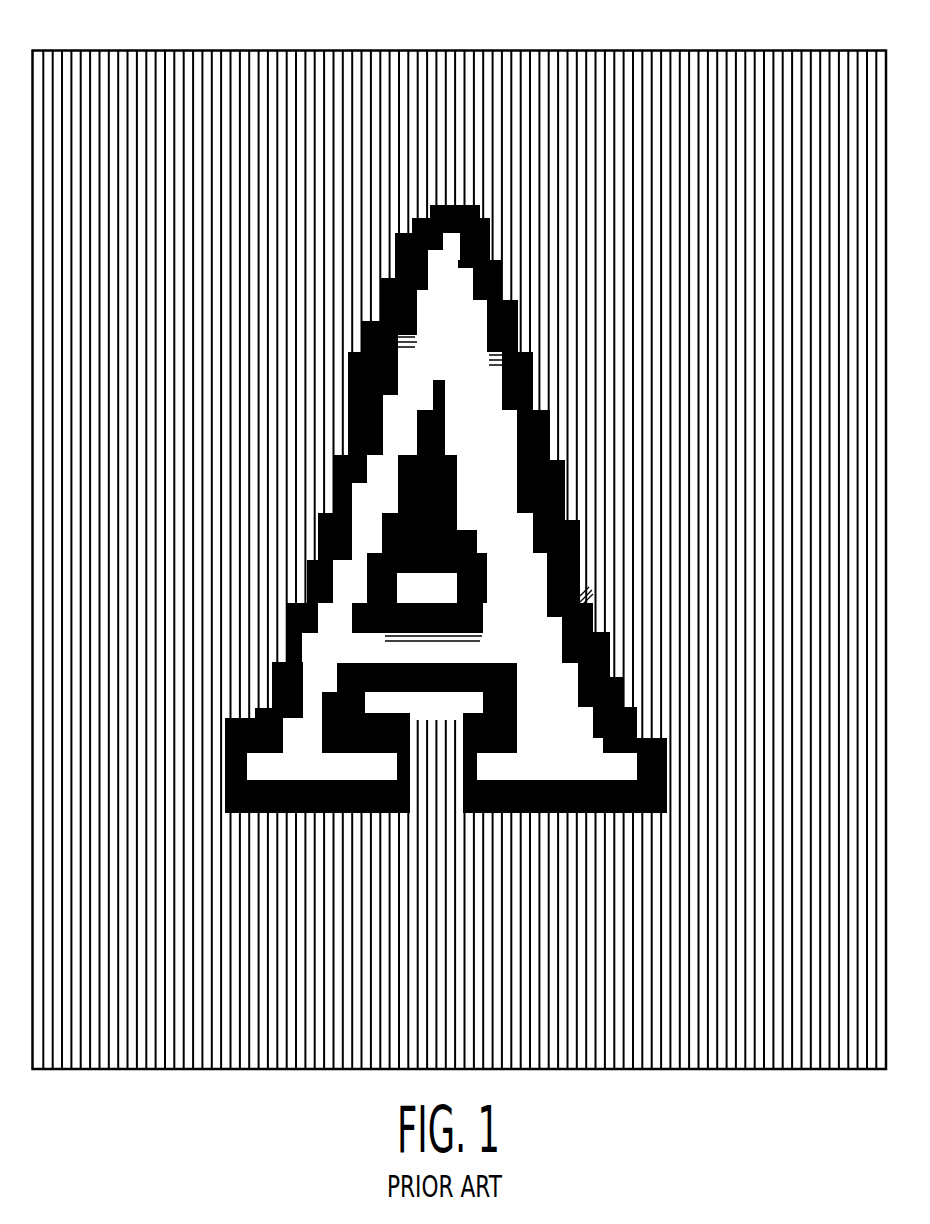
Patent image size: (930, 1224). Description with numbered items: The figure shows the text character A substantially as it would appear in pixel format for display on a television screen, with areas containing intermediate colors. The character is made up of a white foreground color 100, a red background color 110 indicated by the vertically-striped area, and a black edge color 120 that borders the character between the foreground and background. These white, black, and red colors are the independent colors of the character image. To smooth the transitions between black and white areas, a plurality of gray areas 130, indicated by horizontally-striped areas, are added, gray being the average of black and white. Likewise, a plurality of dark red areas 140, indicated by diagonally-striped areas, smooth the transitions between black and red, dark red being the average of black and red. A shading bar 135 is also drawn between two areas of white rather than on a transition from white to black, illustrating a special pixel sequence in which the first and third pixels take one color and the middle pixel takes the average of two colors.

The foreground color 100 is at (578, 758).
The background color 110 is at (450, 50).
The edge color 120 is at (497, 380).
The gray areas 130 is at (402, 338).
The shading bar 135 is at (482, 636).
The dark red areas 140 is at (590, 575).